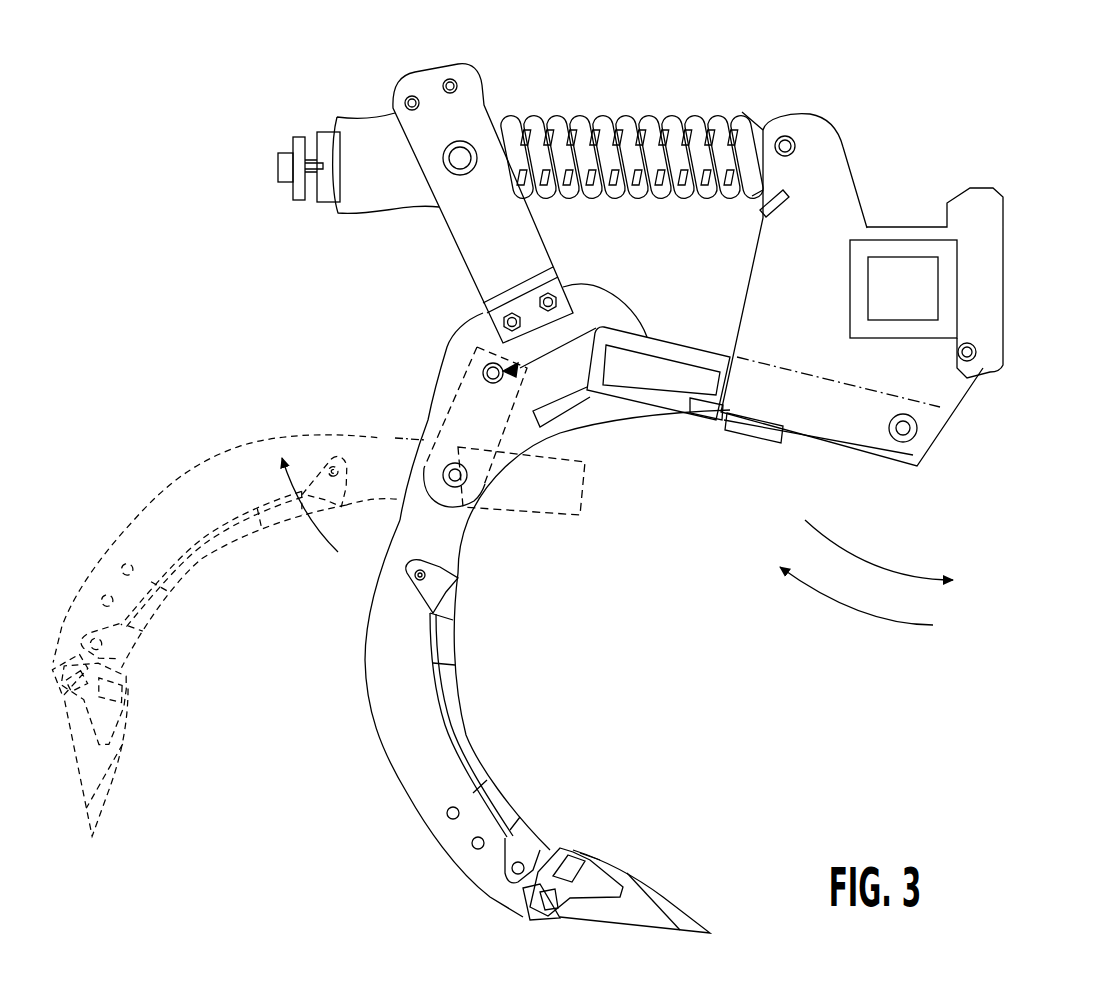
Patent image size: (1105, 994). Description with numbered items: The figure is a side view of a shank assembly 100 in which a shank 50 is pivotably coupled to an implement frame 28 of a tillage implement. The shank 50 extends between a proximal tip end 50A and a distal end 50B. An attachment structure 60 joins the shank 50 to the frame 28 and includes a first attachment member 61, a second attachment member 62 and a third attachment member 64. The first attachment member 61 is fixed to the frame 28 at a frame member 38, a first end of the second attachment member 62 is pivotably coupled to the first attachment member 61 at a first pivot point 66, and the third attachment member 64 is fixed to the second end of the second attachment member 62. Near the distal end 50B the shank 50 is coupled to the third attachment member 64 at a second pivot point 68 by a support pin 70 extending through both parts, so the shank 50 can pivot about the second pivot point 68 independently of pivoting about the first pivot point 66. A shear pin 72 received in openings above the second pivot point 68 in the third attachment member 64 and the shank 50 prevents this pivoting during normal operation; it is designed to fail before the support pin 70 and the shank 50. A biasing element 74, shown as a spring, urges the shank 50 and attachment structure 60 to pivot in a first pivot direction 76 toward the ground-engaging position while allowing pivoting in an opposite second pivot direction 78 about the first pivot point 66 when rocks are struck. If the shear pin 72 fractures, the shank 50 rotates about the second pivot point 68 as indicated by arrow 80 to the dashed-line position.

The shank assembly 100 is at (222, 88).
The implement frame 28 is at (1063, 118).
The frame member 38 is at (907, 250).
The shank 50 is at (220, 455).
The tip end 50A is at (718, 930).
The distal end 50B is at (603, 292).
The attachment structure 60 is at (163, 273).
The first attachment member 61 is at (837, 197).
The second attachment member 62 is at (695, 412).
The third attachment member 64 is at (561, 283).
The first pivot point 66 is at (902, 438).
The second pivot point 68 is at (456, 470).
The support pin 70 is at (452, 482).
The shear pin 72 is at (484, 374).
The biasing element 74 is at (598, 112).
The first pivot direction 76 is at (903, 575).
The second pivot direction 78 is at (845, 612).
The arrow indicating shank rotation 80 is at (314, 552).